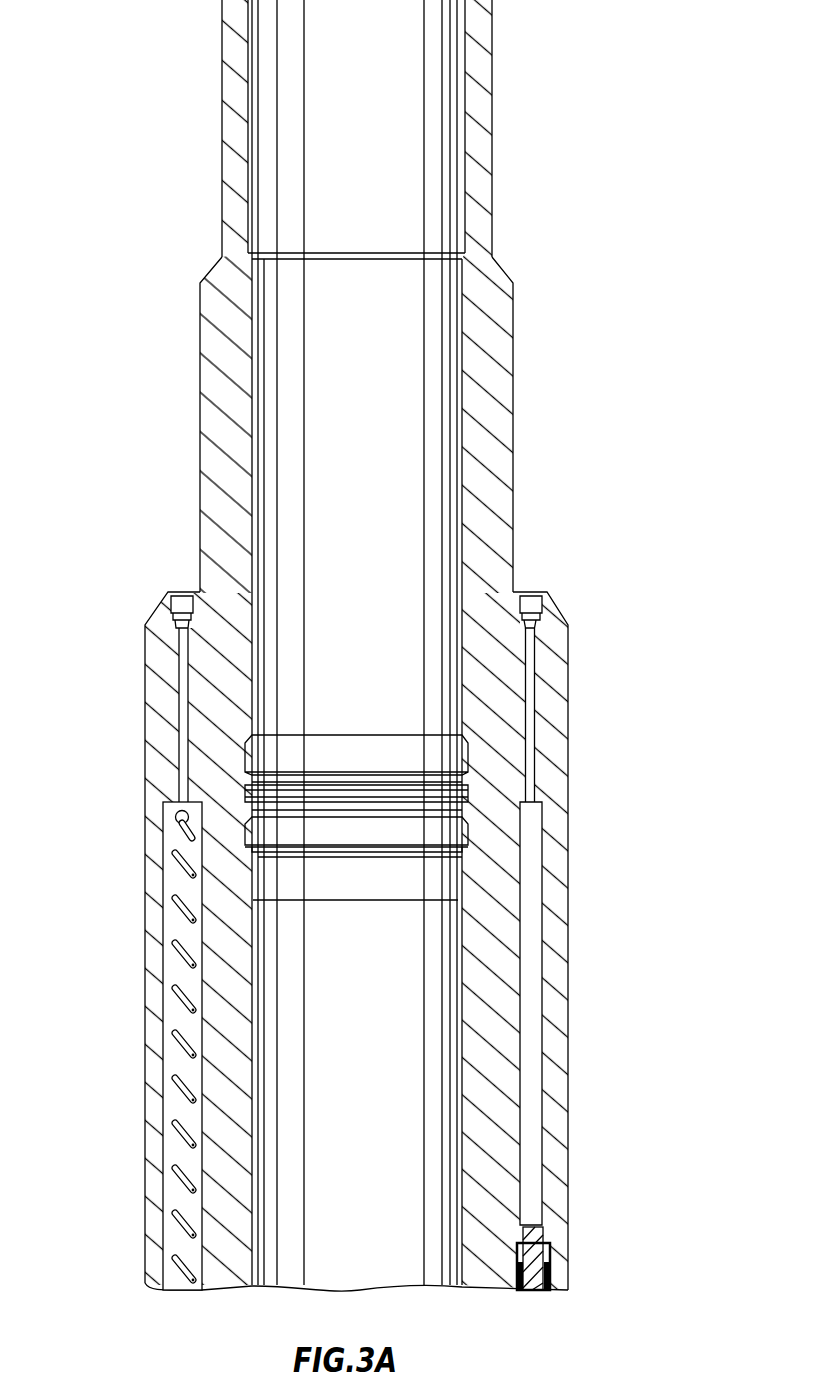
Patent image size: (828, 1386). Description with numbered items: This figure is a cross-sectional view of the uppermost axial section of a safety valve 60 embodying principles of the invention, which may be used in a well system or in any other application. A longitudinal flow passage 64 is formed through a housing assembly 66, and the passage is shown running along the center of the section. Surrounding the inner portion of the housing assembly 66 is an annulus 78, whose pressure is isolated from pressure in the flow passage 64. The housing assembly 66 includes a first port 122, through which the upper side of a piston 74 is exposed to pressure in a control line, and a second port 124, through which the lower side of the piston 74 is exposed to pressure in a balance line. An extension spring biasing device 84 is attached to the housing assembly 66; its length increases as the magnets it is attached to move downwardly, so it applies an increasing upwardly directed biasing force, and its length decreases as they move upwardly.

The safety valve 60 is at (638, 132).
The housing assembly 66 is at (200, 388).
The annulus 78 is at (582, 950).
The longitudinal flow passage 64 is at (463, 1020).
The second port 124 is at (178, 596).
The first port 122 is at (532, 595).
The extension spring biasing device 84 is at (173, 1000).
The piston 74 is at (550, 1280).